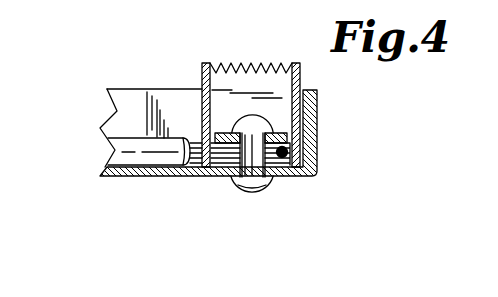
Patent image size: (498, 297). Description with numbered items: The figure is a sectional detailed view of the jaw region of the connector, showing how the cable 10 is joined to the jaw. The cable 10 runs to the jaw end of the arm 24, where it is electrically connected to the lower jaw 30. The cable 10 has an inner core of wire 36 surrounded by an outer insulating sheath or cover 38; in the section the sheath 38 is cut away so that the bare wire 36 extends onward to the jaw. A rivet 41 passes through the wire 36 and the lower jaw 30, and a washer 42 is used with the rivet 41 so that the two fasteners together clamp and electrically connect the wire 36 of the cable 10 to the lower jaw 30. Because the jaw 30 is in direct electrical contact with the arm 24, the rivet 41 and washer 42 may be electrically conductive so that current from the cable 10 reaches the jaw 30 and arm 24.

The cable 10 is at (141, 139).
The arm 24 is at (143, 179).
The lower jaw 30 is at (203, 72).
The wire 36 is at (115, 148).
The insulating sheath 38 is at (207, 150).
The rivet 41 is at (249, 182).
The washer 42 is at (285, 147).